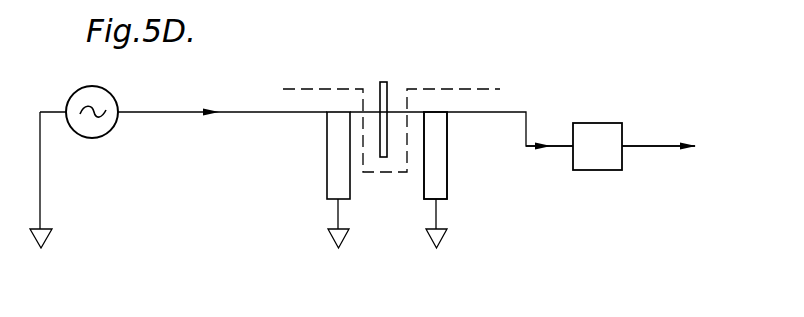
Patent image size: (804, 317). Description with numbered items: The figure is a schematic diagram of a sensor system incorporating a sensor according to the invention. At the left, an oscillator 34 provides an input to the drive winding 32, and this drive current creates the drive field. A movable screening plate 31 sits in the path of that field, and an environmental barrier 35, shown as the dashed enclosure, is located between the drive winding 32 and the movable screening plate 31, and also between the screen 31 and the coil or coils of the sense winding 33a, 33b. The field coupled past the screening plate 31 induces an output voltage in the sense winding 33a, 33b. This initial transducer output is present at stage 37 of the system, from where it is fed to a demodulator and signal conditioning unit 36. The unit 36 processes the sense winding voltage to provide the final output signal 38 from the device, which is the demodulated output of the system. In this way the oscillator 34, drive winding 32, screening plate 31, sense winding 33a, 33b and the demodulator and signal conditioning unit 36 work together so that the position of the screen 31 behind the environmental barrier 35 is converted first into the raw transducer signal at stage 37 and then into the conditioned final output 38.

The movable screening plate 31 is at (380, 95).
The drive winding 32 is at (333, 175).
The sense winding coil 33a is at (445, 192).
The sense winding coil 33b is at (435, 155).
The oscillator 34 is at (88, 135).
The environmental barrier 35 is at (401, 175).
The demodulator and signal conditioning unit 36 is at (594, 162).
The initial transducer output stage 37 is at (555, 148).
The final output signal 38 is at (650, 144).